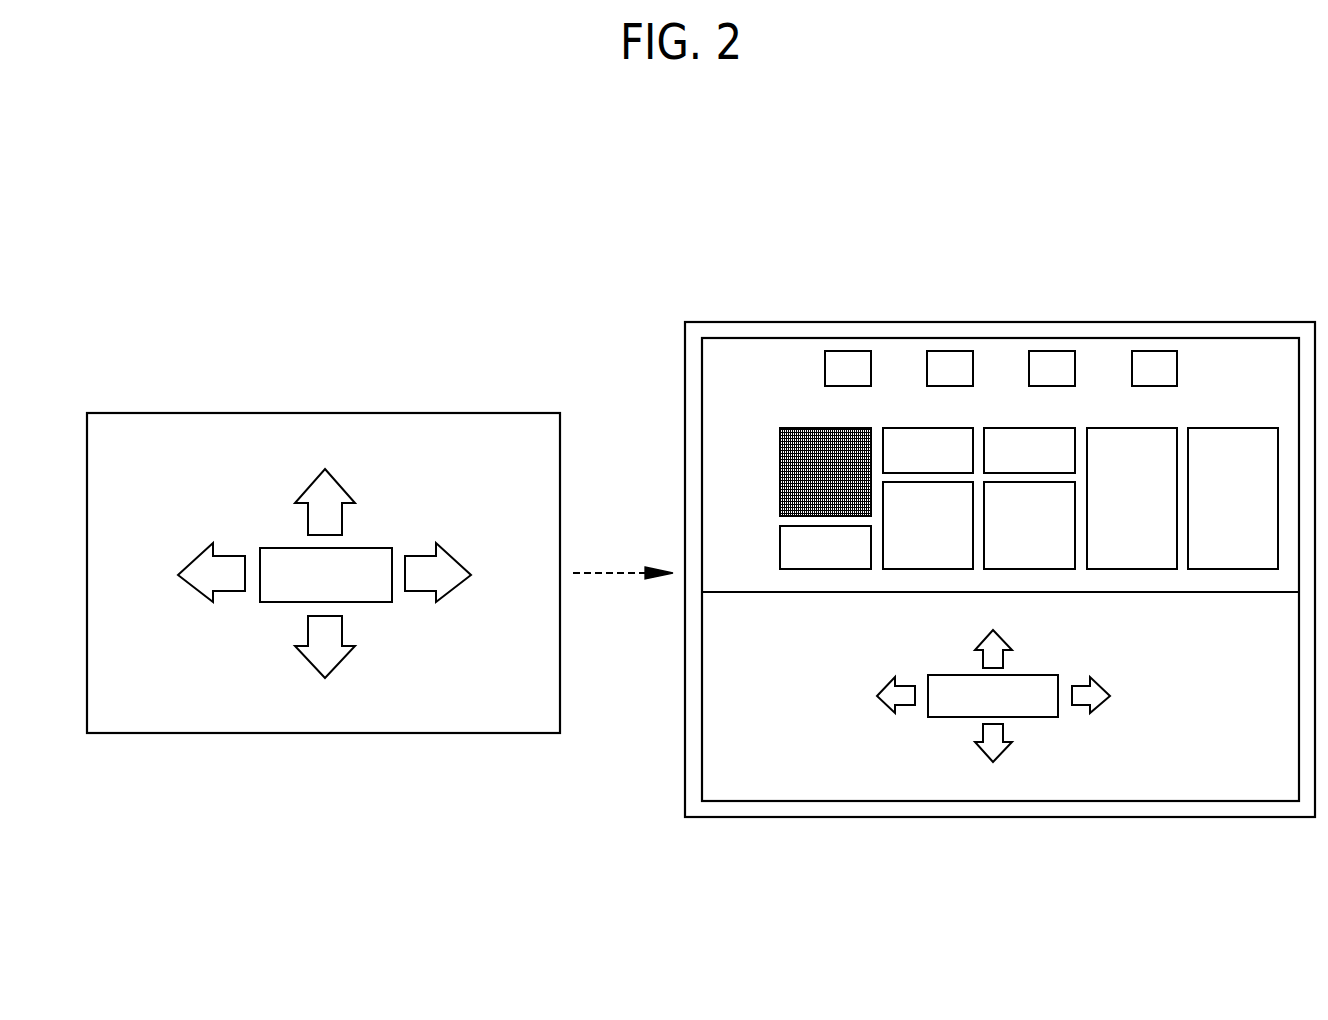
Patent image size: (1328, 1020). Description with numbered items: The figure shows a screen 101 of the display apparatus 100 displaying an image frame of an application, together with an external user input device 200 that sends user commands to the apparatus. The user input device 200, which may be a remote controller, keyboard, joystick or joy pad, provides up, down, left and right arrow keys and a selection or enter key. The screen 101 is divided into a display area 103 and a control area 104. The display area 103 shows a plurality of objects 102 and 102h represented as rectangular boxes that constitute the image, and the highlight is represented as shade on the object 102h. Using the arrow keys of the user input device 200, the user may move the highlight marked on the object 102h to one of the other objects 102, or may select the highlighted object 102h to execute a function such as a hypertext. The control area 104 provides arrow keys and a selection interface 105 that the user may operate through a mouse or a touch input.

The display apparatus 100 is at (657, 310).
The screen 101 is at (1207, 338).
The objects 102 is at (848, 351).
The highlighted object 102h is at (788, 428).
The display area 103 is at (1031, 405).
The control area 104 is at (1007, 748).
The selection interface 105 is at (928, 770).
The user input device 200 is at (322, 412).